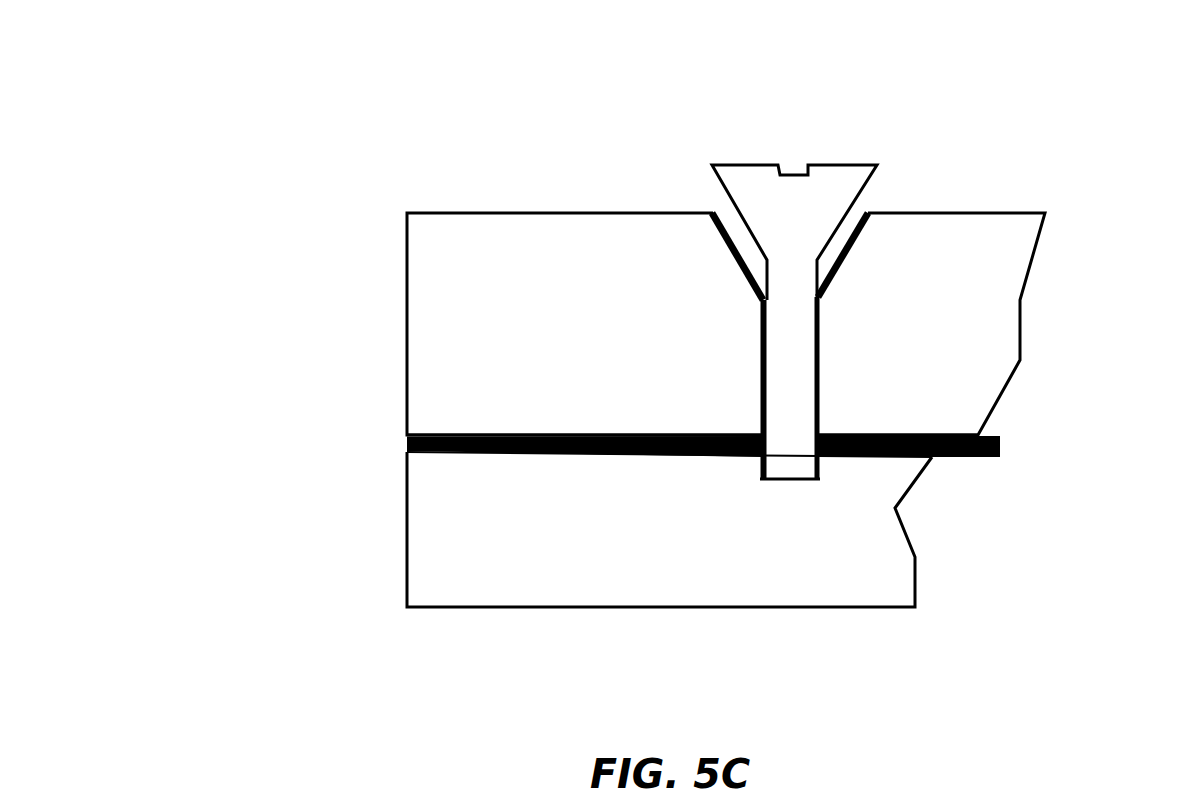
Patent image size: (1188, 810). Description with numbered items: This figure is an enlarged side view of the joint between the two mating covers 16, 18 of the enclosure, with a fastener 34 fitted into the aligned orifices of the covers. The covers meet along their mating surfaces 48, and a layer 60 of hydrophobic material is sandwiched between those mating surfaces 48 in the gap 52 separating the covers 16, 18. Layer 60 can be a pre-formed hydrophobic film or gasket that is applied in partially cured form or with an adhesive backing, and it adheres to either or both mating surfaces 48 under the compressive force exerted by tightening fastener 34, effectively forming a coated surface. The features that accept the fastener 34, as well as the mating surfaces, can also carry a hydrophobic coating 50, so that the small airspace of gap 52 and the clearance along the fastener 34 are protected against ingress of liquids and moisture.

The mating cover 16 is at (407, 276).
The mating cover 18 is at (407, 582).
The fastener 34 is at (867, 165).
The mating surface 48 is at (513, 450).
The hydrophobic coating 50 is at (826, 240).
The gap 52 is at (407, 423).
The layer of hydrophobic material 60 is at (407, 448).